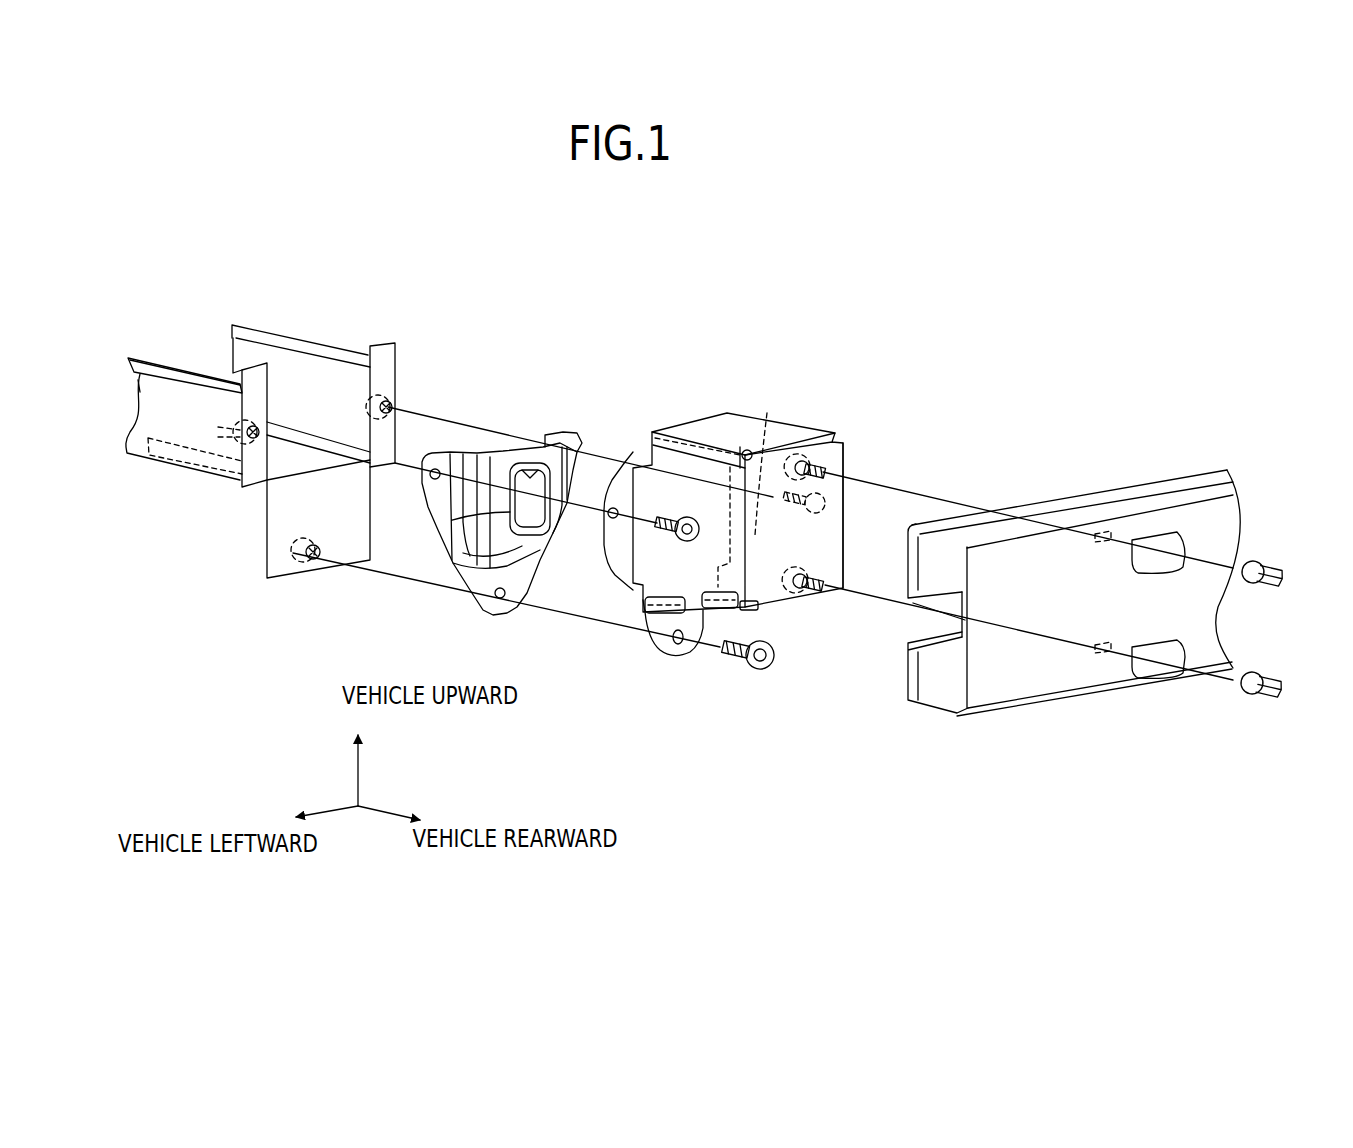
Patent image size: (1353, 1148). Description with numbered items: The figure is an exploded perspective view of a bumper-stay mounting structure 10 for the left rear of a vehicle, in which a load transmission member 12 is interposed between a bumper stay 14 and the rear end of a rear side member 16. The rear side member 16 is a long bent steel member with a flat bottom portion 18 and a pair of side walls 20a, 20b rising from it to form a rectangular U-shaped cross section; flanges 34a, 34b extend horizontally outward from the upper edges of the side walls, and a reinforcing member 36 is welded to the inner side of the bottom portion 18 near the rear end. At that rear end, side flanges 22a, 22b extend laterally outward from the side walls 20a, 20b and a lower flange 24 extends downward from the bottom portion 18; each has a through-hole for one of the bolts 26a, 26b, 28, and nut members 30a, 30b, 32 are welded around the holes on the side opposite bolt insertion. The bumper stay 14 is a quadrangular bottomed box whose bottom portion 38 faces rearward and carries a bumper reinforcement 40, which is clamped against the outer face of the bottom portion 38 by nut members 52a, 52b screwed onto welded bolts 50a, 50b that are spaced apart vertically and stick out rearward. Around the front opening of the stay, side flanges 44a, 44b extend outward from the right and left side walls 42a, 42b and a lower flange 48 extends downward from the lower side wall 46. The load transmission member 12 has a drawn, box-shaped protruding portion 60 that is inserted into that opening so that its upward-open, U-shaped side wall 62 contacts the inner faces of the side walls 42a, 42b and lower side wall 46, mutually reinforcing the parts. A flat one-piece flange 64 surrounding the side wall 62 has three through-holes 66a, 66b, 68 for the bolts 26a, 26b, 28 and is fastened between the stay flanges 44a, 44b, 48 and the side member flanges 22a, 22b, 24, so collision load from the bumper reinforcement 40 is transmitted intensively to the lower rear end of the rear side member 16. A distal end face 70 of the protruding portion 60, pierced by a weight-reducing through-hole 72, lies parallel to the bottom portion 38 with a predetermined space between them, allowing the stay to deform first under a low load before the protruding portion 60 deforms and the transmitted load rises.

The bumper-stay mounting structure 10 is at (778, 222).
The load transmission member 12 is at (519, 385).
The bumper stay 14 is at (800, 378).
The rear side member 16 is at (313, 303).
The bottom portion 18 is at (173, 463).
The side wall 20a is at (150, 397).
The side wall 20b is at (234, 352).
The side flange 22a is at (253, 482).
The side flange 22b is at (385, 350).
The lower flange 24 is at (369, 562).
The bolt 26a is at (683, 516).
The bolt 26b is at (835, 500).
The bolt 28 is at (737, 662).
The nut member 30a is at (245, 431).
The nut member 30b is at (393, 400).
The nut member 32 is at (297, 563).
The flange 34a is at (148, 366).
The flange 34b is at (272, 346).
The reinforcing member 36 is at (305, 468).
The bottom portion 38 is at (812, 545).
The bumper reinforcement 40 is at (1053, 680).
The side wall 42a is at (637, 467).
The side wall 42b is at (846, 535).
The side flange 44a is at (607, 528).
The side flange 44b is at (762, 440).
The lower side wall 46 is at (772, 612).
The lower flange 48 is at (663, 645).
The bolt 50a is at (809, 463).
The bolt 50b is at (838, 590).
The nut member 52a is at (1260, 562).
The nut member 52b is at (1260, 673).
The protruding portion 60 is at (502, 435).
The side wall 62 is at (468, 553).
The flange 64 is at (512, 583).
The through-hole 66a is at (430, 479).
The through-hole 66b is at (578, 432).
The through-hole 68 is at (498, 600).
The distal end face 70 is at (545, 540).
The through-hole 72 is at (530, 472).